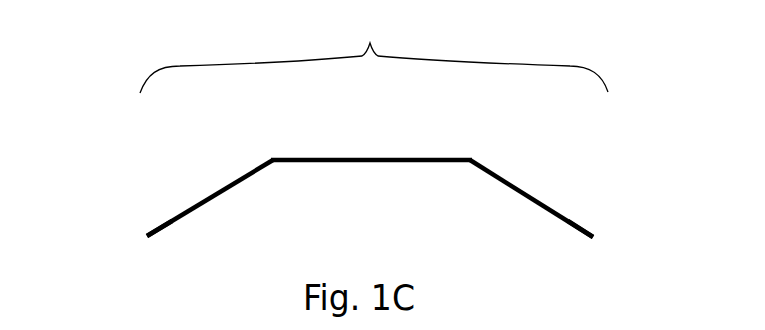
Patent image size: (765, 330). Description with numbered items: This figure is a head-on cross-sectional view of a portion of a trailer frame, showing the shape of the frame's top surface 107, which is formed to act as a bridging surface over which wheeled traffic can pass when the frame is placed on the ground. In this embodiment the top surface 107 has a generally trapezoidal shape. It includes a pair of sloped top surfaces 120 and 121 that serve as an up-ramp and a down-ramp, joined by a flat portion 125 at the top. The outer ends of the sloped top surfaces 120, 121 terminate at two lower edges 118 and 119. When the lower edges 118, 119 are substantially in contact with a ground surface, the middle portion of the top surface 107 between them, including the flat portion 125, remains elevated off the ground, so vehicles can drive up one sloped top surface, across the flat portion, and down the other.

The top surface 107 is at (374, 53).
The lower edge 118 is at (593, 237).
The lower edge 119 is at (147, 235).
The sloped top surface 120 is at (538, 200).
The sloped top surface 121 is at (200, 204).
The flat portion 125 is at (367, 159).